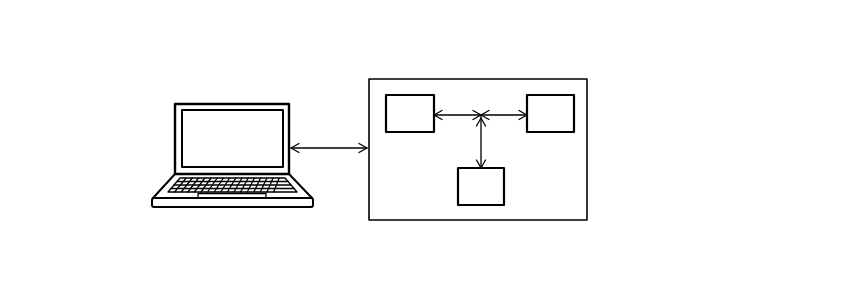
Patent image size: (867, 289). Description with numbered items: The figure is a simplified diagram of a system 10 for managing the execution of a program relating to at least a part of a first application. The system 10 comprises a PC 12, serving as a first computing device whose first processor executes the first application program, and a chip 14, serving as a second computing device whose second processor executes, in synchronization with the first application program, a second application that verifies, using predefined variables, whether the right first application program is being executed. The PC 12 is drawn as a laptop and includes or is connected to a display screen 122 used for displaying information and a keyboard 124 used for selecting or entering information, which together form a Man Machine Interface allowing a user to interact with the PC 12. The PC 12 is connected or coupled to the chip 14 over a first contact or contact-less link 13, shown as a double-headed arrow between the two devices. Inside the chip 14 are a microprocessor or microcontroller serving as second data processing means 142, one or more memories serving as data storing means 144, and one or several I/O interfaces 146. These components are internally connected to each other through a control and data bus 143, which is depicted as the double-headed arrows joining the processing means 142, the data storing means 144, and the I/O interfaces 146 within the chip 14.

The system 10 is at (138, 107).
The PC 12 is at (195, 104).
The display screen 122 is at (233, 110).
The keyboard 124 is at (273, 198).
The contact or contact-less link 13 is at (338, 152).
The chip 14 is at (450, 79).
The second data processing means 142 is at (402, 95).
The control and data bus 143 is at (507, 110).
The data storing means 144 is at (547, 95).
The I/O interfaces 146 is at (483, 205).